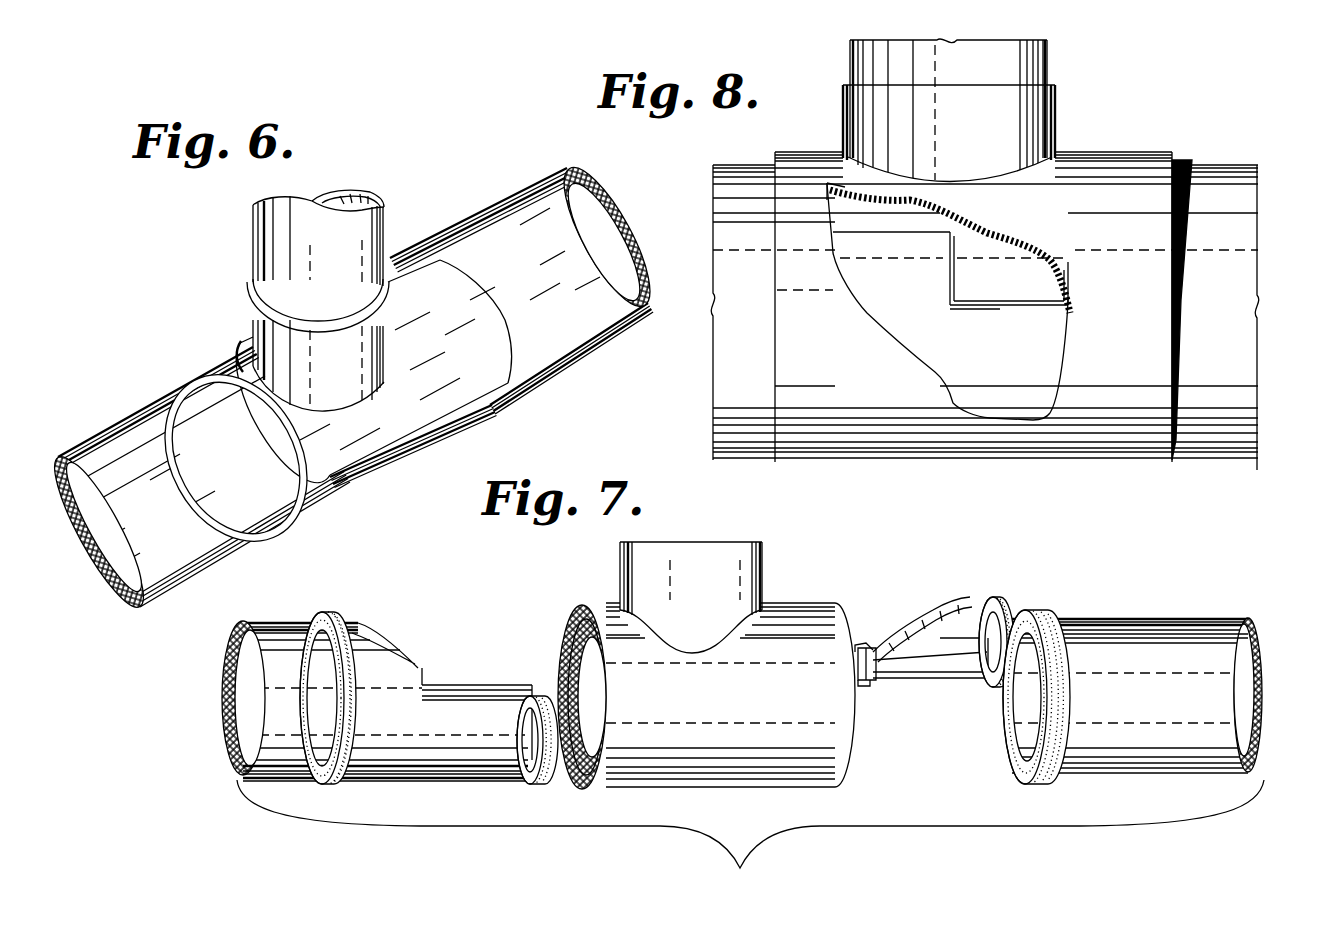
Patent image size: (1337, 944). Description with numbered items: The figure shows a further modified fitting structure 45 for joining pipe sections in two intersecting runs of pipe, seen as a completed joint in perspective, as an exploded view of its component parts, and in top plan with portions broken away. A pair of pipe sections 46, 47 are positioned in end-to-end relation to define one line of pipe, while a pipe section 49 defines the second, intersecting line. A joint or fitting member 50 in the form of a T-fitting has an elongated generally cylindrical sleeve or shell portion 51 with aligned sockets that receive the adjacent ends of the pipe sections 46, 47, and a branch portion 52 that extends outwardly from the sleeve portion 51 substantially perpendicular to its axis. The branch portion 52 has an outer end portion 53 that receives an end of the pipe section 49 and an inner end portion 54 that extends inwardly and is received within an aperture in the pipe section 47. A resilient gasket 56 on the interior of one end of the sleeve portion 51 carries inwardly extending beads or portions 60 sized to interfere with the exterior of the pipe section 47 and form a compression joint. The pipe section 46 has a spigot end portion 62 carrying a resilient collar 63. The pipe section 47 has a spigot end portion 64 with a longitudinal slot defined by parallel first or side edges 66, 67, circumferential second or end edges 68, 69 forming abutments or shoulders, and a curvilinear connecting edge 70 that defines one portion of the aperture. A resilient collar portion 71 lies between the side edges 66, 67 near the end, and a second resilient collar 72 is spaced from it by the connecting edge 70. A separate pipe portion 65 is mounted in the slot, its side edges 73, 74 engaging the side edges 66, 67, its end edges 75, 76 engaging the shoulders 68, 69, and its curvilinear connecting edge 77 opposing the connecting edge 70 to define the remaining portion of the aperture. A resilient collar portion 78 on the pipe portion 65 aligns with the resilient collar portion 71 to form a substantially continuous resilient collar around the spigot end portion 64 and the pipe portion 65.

In FIG. 6, the fitting structure 45 is at (353, 386).
In FIG. 8, the fitting structure 45 is at (984, 264).
In FIG. 7, the fitting structure 45 is at (703, 660).
In FIG. 6, the pipe section 46 is at (513, 199).
In FIG. 8, the pipe section 46 is at (1210, 162).
In FIG. 7, the pipe section 46 is at (1171, 615).
In FIG. 6, the pipe section 47 is at (106, 430).
In FIG. 8, the pipe section 47 is at (745, 150).
In FIG. 7, the pipe section 47 is at (262, 618).
In FIG. 6, the pipe section 49 is at (385, 240).
In FIG. 8, the pipe section 49 is at (850, 64).
In FIG. 6, the joint or fitting member 50 is at (434, 397).
In FIG. 8, the joint or fitting member 50 is at (1111, 153).
In FIG. 7, the joint or fitting member 50 is at (774, 598).
In FIG. 6, the sleeve or shell portion 51 is at (240, 352).
In FIG. 8, the sleeve or shell portion 51 is at (1089, 403).
In FIG. 7, the sleeve or shell portion 51 is at (838, 739).
In FIG. 6, the branch portion 52 is at (260, 328).
In FIG. 8, the branch portion 52 is at (1018, 108).
In FIG. 7, the branch portion 52 is at (648, 573).
In FIG. 6, the outer end portion 53 is at (324, 384).
In FIG. 8, the outer end portion 53 is at (1000, 179).
In FIG. 7, the outer end portion 53 is at (711, 645).
In FIG. 8, the inner end portion 54 is at (925, 218).
In FIG. 7, the resilient gasket 56 is at (563, 637).
In FIG. 7, the inwardly extending beads or portions 60 is at (562, 667).
In FIG. 7, the spigot end portion 62 is at (1092, 619).
In FIG. 7, the resilient collar 63 is at (1041, 614).
In FIG. 8, the spigot end portion 64 is at (900, 328).
In FIG. 7, the spigot end portion 64 is at (436, 782).
In FIG. 8, the pipe portion 65 is at (1047, 287).
In FIG. 7, the pipe portion 65 is at (921, 605).
In FIG. 8, the first or side edge 66 is at (969, 307).
In FIG. 7, the first or side edge 66 is at (508, 696).
In FIG. 7, the first or side edge 67 is at (465, 690).
In FIG. 8, the second or end edge 68 is at (951, 298).
In FIG. 7, the second or end edge 68 is at (424, 678).
In FIG. 7, the second or end edge 69 is at (405, 662).
In FIG. 7, the connecting edge 70 is at (390, 612).
In FIG. 7, the resilient collar portion 71 is at (528, 786).
In FIG. 7, the second resilient collar 72 is at (335, 786).
In FIG. 8, the side edge 73 is at (1012, 294).
In FIG. 7, the side edge 73 is at (925, 680).
In FIG. 7, the side edge 74 is at (862, 688).
In FIG. 8, the end edge 75 is at (952, 280).
In FIG. 7, the end edge 75 is at (872, 648).
In FIG. 7, the end edge 76 is at (860, 646).
In FIG. 7, the connecting edge 77 is at (904, 630).
In FIG. 7, the resilient collar portion 78 is at (978, 601).